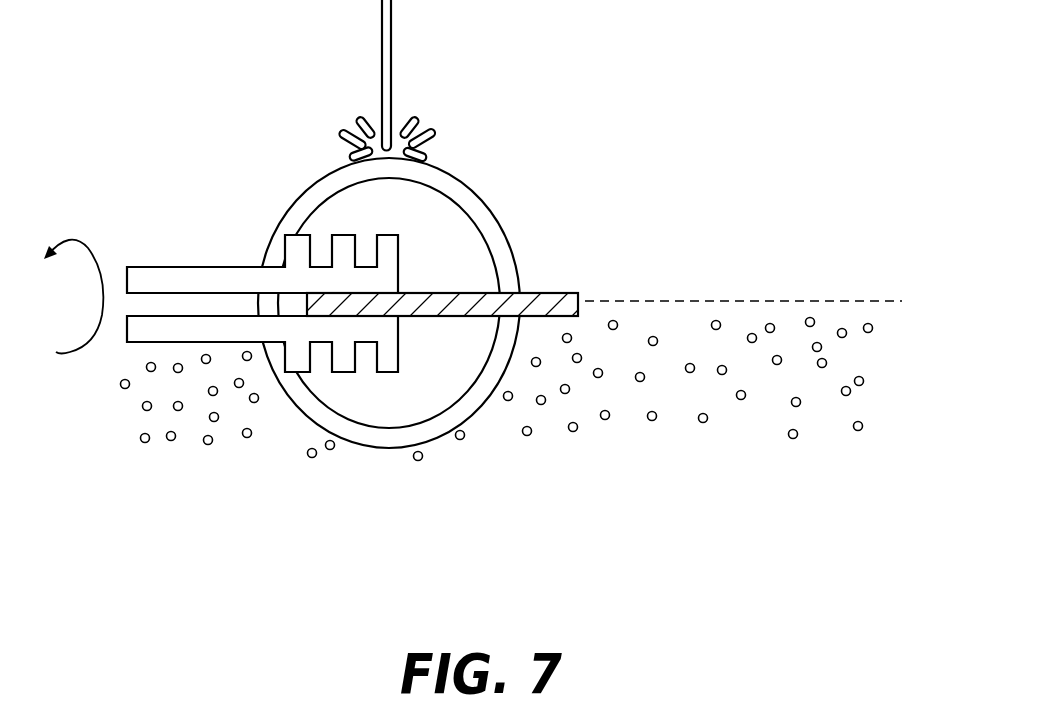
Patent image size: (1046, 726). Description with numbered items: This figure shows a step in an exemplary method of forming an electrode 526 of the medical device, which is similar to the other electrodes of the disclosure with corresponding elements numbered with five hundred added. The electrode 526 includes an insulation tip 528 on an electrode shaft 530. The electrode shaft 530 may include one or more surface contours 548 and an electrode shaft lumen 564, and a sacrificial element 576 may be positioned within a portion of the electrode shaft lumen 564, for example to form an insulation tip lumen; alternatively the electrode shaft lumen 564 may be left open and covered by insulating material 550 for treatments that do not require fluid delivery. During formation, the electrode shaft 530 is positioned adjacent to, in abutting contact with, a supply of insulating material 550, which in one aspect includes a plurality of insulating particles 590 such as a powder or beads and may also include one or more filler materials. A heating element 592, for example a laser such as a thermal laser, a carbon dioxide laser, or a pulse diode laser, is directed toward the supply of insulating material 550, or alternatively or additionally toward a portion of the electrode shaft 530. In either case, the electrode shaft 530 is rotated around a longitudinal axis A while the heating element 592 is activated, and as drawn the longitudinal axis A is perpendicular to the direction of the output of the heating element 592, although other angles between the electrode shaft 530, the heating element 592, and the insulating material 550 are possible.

The electrode 526 is at (251, 160).
The insulation tip 528 is at (477, 202).
The electrode shaft 530 is at (222, 266).
The surface contours 548 is at (340, 235).
The electrode shaft lumen 564 is at (188, 308).
The sacrificial element 576 is at (556, 290).
The heating element 592 is at (392, 15).
The insulating material 550 is at (895, 313).
The insulating particles 590 is at (652, 421).
The longitudinal axis A is at (757, 300).